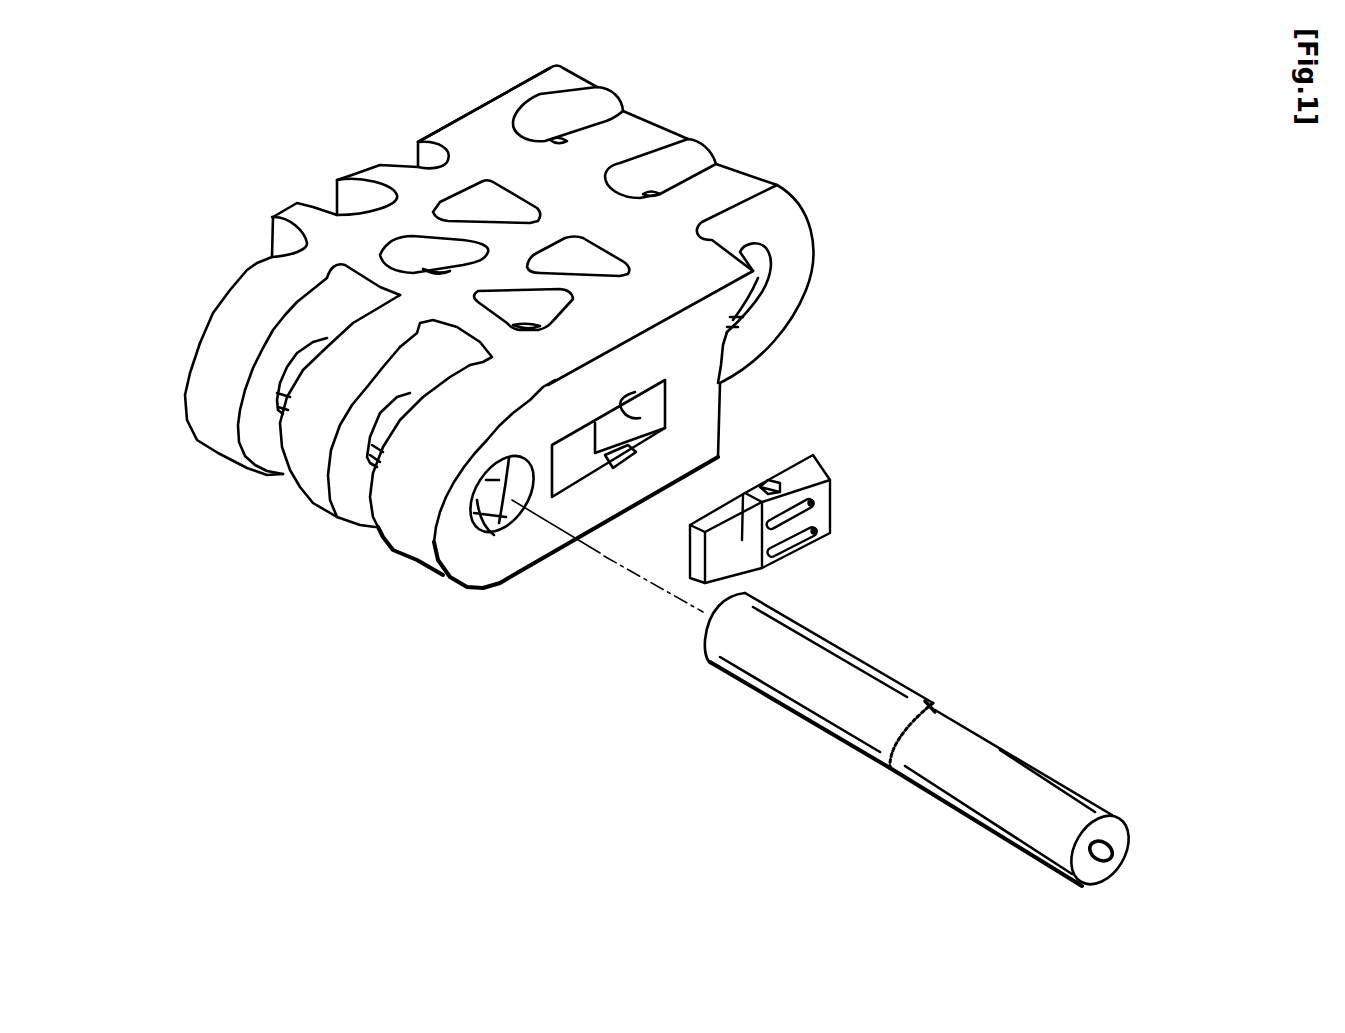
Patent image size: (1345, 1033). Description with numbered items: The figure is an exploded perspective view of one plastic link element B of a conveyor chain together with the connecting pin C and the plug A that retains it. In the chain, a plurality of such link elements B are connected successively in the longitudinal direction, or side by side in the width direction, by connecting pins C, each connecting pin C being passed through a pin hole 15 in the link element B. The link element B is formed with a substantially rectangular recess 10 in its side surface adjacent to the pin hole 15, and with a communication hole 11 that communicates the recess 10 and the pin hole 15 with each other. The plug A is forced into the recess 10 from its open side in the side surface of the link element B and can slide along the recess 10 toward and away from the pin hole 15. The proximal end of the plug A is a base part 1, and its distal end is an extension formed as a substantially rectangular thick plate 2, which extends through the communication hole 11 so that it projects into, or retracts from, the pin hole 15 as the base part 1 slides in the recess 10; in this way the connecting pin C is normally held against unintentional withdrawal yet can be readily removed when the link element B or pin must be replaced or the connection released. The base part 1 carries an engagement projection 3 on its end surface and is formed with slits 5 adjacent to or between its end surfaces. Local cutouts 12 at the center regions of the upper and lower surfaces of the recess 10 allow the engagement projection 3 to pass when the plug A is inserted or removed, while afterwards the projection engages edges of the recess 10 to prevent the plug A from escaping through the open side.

The base part 1 is at (830, 542).
The extension plate 2 is at (720, 562).
The engagement projection 3 is at (772, 481).
The slits 5 is at (818, 506).
The recess 10 is at (560, 452).
The communication hole 11 is at (445, 576).
The cutouts 12 is at (666, 428).
The pin hole 15 is at (771, 290).
The plug A is at (845, 532).
The link element B is at (774, 186).
The connecting pin C is at (785, 680).